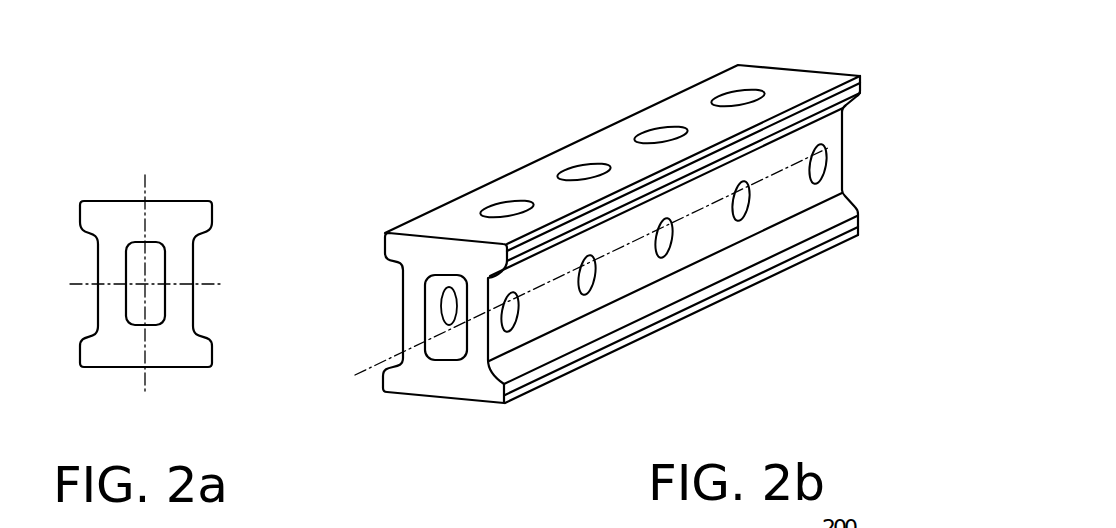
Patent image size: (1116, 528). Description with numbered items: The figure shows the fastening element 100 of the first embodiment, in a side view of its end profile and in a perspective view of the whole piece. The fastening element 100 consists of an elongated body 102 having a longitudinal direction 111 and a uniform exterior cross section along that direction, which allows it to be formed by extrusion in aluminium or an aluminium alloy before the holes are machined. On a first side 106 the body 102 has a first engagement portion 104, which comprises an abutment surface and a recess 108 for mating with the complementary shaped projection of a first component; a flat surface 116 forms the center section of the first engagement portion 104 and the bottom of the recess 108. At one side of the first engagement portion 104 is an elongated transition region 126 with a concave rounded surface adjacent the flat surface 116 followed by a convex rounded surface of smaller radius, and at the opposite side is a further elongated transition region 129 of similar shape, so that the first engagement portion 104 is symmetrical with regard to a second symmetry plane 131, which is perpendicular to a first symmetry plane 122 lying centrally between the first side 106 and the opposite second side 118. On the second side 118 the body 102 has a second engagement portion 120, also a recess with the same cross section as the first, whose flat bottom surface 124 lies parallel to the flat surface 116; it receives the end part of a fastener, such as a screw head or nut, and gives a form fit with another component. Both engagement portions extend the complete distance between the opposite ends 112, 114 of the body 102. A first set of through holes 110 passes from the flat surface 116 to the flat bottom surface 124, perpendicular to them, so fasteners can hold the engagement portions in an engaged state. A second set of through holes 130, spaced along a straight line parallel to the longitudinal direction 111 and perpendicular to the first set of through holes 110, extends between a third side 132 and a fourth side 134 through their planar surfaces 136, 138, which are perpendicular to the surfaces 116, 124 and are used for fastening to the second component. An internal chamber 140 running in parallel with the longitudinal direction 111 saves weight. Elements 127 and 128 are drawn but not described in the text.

In FIG. 2a, the fastening element 100 is at (181, 112).
In FIG. 2b, the fastening element 100 is at (851, 58).
In FIG. 2a, the body 102 is at (182, 220).
In FIG. 2b, the body 102 is at (683, 115).
In FIG. 2a, the first engagement portion 104 is at (212, 326).
In FIG. 2b, the first engagement portion 104 is at (778, 198).
In FIG. 2a, the first side 106 is at (236, 358).
In FIG. 2b, the first side 106 is at (721, 323).
In FIG. 2a, the recess 108 is at (209, 260).
In FIG. 2b, the recess 108 is at (625, 272).
In FIG. 2b, the first set of through holes 110 is at (836, 173).
In FIG. 2b, the longitudinal direction 111 is at (836, 142).
In FIG. 2b, the end of the body 112 is at (420, 387).
In FIG. 2b, the end of the body 114 is at (843, 126).
In FIG. 2a, the flat surface 116 is at (194, 288).
In FIG. 2b, the flat surface 116 is at (548, 308).
In FIG. 2a, the second side 118 is at (74, 331).
In FIG. 2b, the second side 118 is at (378, 283).
In FIG. 2a, the second engagement portion 120 is at (98, 311).
In FIG. 2b, the second engagement portion 120 is at (400, 337).
In FIG. 2a, the first symmetry plane 122 is at (144, 187).
In FIG. 2a, the flat bottom surface 124 is at (97, 258).
In FIG. 2b, the flat bottom surface 124 is at (400, 312).
In FIG. 2a, the elongated transition region 126 is at (222, 232).
In FIG. 2b, the elongated transition region 126 is at (844, 198).
In FIG. 2a, the flange-web transition 127 is at (200, 232).
In FIG. 2b, the flange-web transition 127 is at (702, 178).
In FIG. 2a, the flange edge 128 is at (212, 231).
In FIG. 2b, the flange edge 128 is at (448, 408).
In FIG. 2a, the further elongated transition region 129 is at (219, 351).
In FIG. 2b, the further elongated transition region 129 is at (531, 370).
In FIG. 2b, the second set of through holes 130 is at (740, 100).
In FIG. 2a, the second symmetry plane 131 is at (86, 284).
In FIG. 2a, the third side 132 is at (93, 193).
In FIG. 2b, the third side 132 is at (607, 144).
In FIG. 2a, the fourth side 134 is at (162, 386).
In FIG. 2b, the fourth side 134 is at (483, 422).
In FIG. 2a, the planar surface 136 is at (170, 200).
In FIG. 2b, the planar surface 136 is at (537, 192).
In FIG. 2a, the planar surface 138 is at (125, 356).
In FIG. 2a, the internal chamber 140 is at (133, 303).
In FIG. 2b, the internal chamber 140 is at (433, 327).